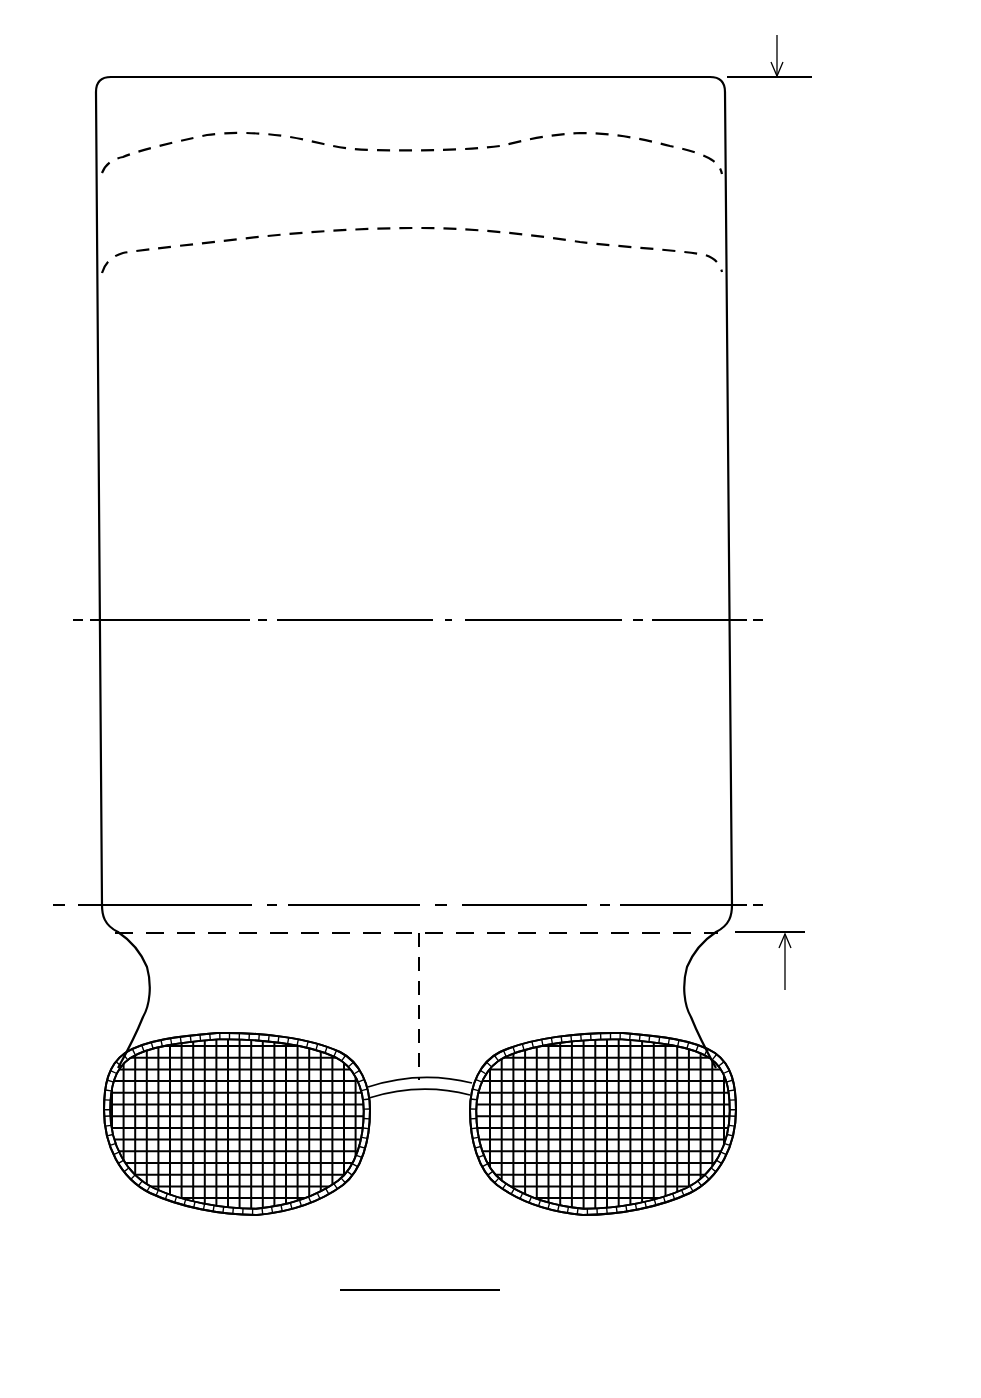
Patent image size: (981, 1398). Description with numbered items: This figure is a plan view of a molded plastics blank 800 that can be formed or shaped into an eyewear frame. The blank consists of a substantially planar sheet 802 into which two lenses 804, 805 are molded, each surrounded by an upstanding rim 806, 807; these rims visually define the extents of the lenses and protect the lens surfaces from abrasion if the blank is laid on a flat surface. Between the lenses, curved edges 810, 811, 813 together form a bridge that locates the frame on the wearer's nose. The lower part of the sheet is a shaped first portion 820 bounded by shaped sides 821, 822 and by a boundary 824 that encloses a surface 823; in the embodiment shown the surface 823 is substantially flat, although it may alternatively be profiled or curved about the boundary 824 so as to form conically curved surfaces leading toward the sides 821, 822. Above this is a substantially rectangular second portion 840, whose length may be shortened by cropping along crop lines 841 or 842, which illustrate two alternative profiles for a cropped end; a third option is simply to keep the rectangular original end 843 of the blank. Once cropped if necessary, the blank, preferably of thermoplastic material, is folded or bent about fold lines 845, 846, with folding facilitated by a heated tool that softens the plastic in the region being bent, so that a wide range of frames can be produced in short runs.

The molded plastics blank 800 is at (134, 39).
The substantially planar sheet 802 is at (236, 415).
The molded lens 804 is at (215, 1195).
The molded lens 805 is at (582, 1198).
The upstanding rim 806 is at (148, 1195).
The upstanding rim 807 is at (656, 1208).
The curved edge 810 is at (350, 1180).
The curved edge 811 is at (490, 1178).
The curved edge 813 is at (404, 1098).
The shaped first portion 820 is at (348, 997).
The shaped side 821 is at (148, 1000).
The shaped side 822 is at (705, 1035).
The surface 823 is at (596, 997).
The boundary 824 is at (218, 936).
The substantially rectangular second portion 840 is at (497, 484).
The crop line 841 is at (190, 145).
The crop line 842 is at (240, 246).
The original end 843 is at (555, 77).
The fold line 845 is at (200, 620).
The fold line 846 is at (218, 905).